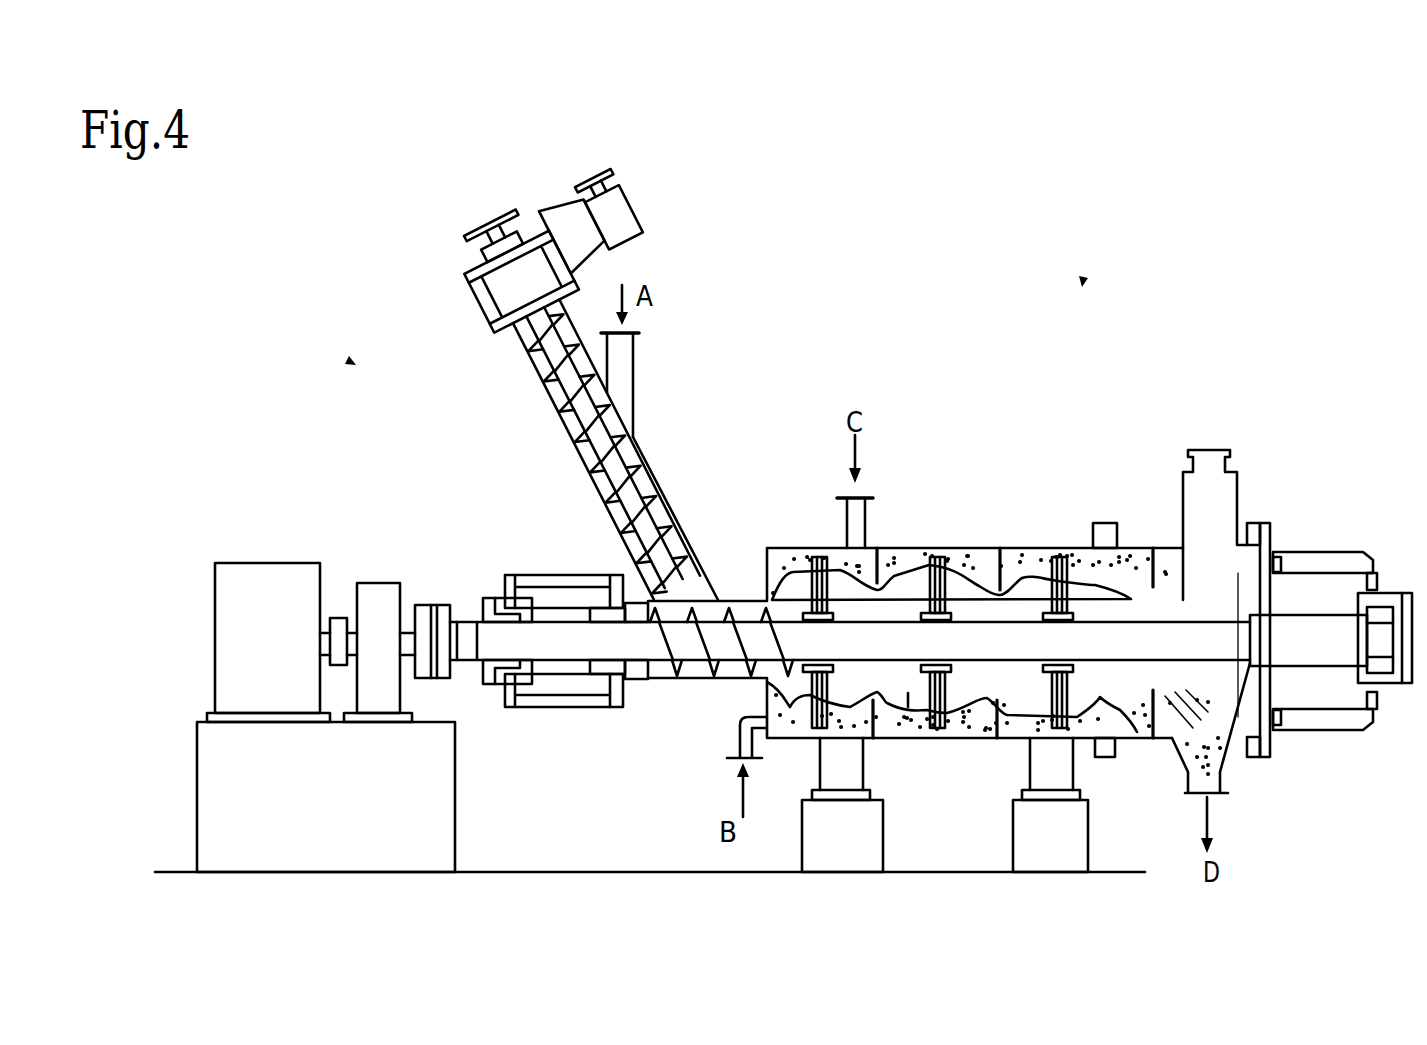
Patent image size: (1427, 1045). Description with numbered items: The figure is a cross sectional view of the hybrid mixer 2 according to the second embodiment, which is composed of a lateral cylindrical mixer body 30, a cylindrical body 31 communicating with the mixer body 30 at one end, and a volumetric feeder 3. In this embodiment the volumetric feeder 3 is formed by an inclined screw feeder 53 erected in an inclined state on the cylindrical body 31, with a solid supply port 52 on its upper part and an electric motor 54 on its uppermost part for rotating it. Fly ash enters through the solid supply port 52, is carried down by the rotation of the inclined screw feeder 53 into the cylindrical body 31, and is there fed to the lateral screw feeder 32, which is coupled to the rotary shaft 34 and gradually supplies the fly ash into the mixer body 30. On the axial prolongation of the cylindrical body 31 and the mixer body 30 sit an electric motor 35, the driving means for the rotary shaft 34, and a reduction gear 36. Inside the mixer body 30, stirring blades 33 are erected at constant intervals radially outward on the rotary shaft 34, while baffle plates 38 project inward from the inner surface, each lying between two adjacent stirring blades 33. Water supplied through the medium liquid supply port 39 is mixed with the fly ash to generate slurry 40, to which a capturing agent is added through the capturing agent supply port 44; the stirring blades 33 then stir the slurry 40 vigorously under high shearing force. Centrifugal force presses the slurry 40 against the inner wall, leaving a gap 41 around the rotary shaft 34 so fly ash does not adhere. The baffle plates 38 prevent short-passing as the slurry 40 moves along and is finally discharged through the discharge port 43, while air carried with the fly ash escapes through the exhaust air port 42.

The hybrid mixer 2 is at (1083, 284).
The volumetric feeder 3 is at (352, 363).
The mixer body 30 is at (776, 547).
The cylindrical body 31 is at (657, 680).
The lateral screw feeder 32 is at (730, 680).
The stirring blades 33 is at (967, 547).
The rotary shaft 34 is at (1012, 605).
The electric motor 35 is at (272, 563).
The reduction gear 36 is at (377, 582).
The baffle plates 38 is at (882, 546).
The medium liquid supply port 39 is at (739, 742).
The slurry 40 is at (833, 545).
The gap 41 is at (912, 738).
The exhaust air port 42 is at (1237, 483).
The discharge port 43 is at (1223, 777).
The capturing agent supply port 44 is at (866, 524).
The solid supply port 52 is at (635, 357).
The inclined screw feeder 53 is at (635, 457).
The electric motor 54 is at (637, 208).